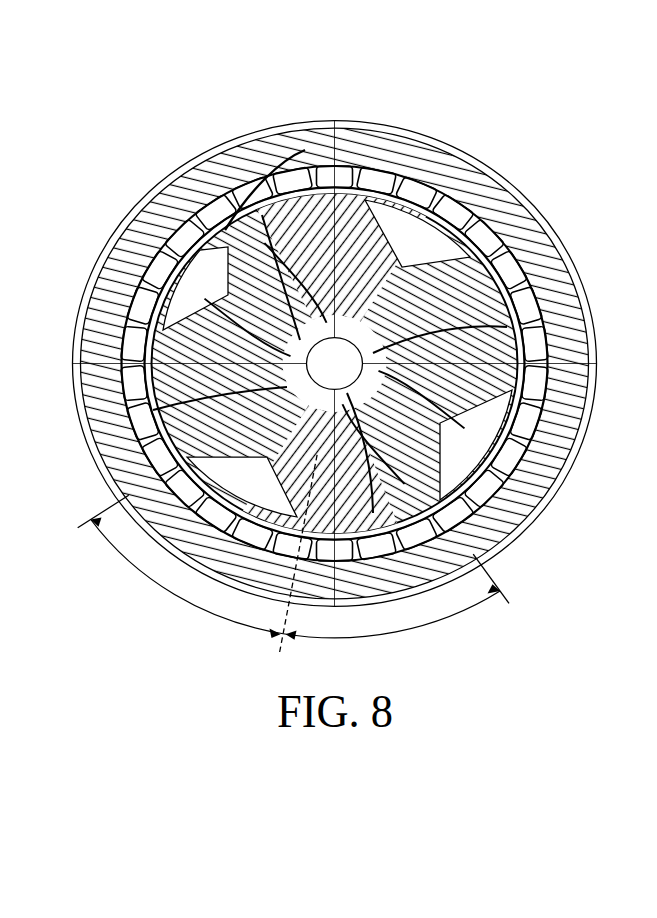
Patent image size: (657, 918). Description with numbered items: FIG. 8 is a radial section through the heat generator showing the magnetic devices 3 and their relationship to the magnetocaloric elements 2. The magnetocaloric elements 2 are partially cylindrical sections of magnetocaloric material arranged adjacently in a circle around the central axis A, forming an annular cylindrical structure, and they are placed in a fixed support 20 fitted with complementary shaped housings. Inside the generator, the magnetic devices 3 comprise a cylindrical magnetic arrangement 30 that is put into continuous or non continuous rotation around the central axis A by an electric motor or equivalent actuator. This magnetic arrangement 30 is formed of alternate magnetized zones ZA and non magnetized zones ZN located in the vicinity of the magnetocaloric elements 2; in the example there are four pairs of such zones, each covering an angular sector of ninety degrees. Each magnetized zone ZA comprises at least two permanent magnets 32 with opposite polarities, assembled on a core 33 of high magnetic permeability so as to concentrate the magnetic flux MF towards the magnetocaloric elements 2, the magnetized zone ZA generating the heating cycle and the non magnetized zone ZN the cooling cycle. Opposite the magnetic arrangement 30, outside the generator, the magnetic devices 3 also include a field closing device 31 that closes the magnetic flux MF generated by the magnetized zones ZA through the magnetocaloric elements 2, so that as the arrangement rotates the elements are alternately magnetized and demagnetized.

The magnetocaloric elements 2 is at (418, 184).
The magnetic devices 3 is at (463, 99).
The fixed support 20 is at (523, 530).
The magnetic arrangement 30 is at (106, 257).
The field closing device 31 is at (362, 137).
The permanent magnets 32 is at (300, 152).
The core 33 is at (465, 200).
The magnetic flux MF is at (535, 207).
The central axis A is at (335, 364).
The non magnetized zones ZN is at (180, 566).
The magnetized zones ZA is at (394, 554).